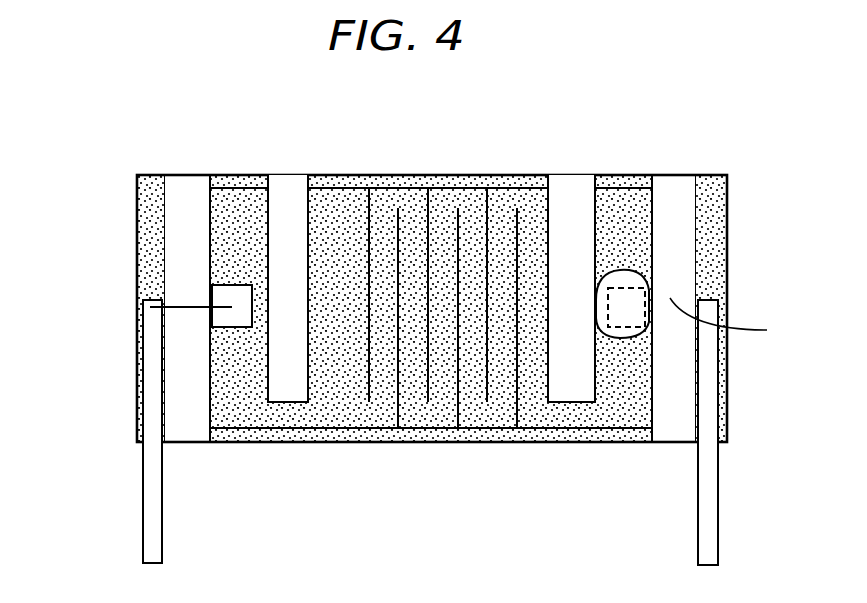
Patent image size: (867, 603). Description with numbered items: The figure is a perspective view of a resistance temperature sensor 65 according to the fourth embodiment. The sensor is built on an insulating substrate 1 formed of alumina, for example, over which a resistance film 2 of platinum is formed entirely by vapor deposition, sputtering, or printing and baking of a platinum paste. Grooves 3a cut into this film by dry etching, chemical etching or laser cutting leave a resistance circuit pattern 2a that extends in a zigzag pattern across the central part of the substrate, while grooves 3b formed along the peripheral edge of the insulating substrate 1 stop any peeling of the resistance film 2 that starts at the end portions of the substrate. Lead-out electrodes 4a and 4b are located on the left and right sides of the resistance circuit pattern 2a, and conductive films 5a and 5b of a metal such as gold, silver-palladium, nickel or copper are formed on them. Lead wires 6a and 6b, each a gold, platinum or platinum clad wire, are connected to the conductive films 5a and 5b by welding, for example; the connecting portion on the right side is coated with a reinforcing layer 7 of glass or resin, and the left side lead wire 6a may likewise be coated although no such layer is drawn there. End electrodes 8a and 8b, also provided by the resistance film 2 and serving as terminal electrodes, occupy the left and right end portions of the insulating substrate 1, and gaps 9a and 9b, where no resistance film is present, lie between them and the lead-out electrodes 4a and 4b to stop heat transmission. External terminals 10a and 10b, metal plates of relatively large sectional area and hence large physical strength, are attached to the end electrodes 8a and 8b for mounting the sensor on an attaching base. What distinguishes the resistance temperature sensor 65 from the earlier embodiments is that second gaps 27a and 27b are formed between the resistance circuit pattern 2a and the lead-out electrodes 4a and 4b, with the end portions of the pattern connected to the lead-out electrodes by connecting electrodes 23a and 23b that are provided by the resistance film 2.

The insulating substrate 1 is at (728, 202).
The resistance film 2 is at (439, 214).
The resistance circuit pattern 2a is at (433, 390).
The grooves 3a is at (339, 405).
The grooves 3b is at (242, 185).
The lead-out electrode 4a is at (231, 392).
The lead-out electrode 4b is at (620, 388).
The conductive film 5a is at (213, 285).
The conductive film 5b is at (630, 298).
The lead wire 6a is at (175, 303).
The lead wire 6b is at (735, 322).
The reinforcing layer 7 is at (622, 318).
The end electrode 8a is at (145, 180).
The end electrode 8b is at (710, 182).
The gap 9a is at (195, 183).
The gap 9b is at (667, 188).
The external terminal 10a is at (153, 542).
The external terminal 10b is at (703, 543).
The connecting electrode 23a is at (291, 410).
The connecting electrode 23b is at (543, 413).
The second gap 27a is at (297, 185).
The second gap 27b is at (577, 202).
The resistance temperature sensor 65 is at (688, 75).